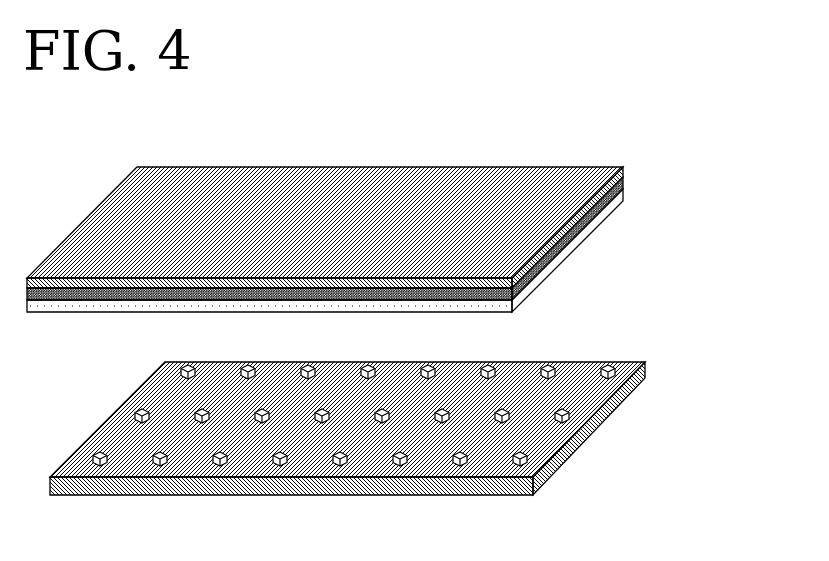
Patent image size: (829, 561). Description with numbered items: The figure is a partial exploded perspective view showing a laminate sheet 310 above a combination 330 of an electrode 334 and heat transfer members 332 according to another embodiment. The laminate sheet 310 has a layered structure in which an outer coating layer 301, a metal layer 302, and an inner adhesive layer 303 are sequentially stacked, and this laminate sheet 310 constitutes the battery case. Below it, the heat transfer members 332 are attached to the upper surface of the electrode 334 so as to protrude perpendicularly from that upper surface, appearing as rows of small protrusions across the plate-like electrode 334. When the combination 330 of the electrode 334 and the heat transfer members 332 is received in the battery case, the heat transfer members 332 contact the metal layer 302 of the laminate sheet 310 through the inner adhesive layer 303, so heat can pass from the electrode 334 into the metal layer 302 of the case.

The outer coating layer 301 is at (624, 173).
The metal layer 302 is at (624, 183).
The inner adhesive layer 303 is at (367, 250).
The laminate sheet 310 is at (398, 227).
The combination of the electrode and the heat transfer members 330 is at (403, 395).
The heat transfer members 332 is at (553, 365).
The electrode 334 is at (597, 390).